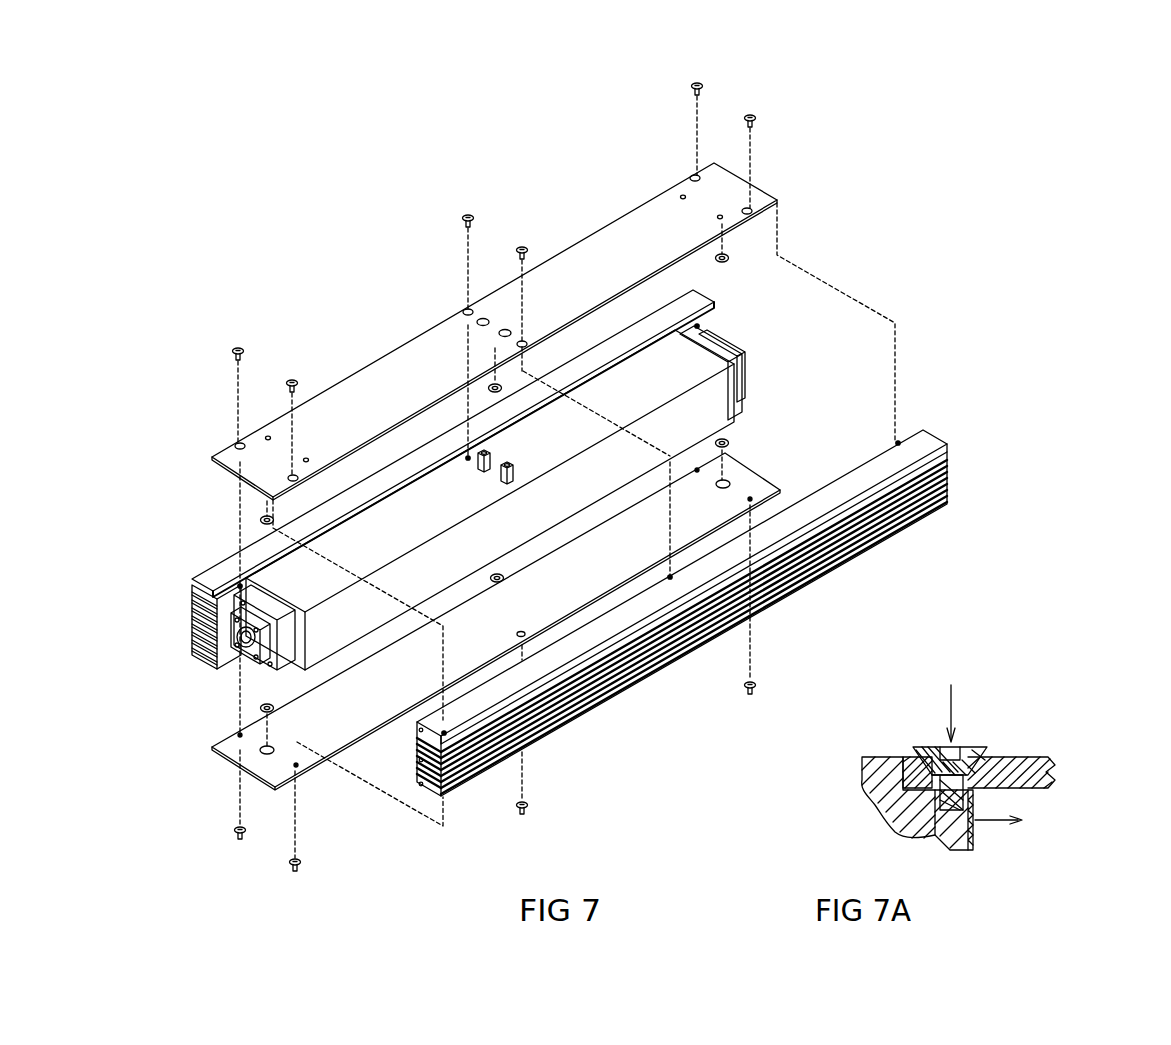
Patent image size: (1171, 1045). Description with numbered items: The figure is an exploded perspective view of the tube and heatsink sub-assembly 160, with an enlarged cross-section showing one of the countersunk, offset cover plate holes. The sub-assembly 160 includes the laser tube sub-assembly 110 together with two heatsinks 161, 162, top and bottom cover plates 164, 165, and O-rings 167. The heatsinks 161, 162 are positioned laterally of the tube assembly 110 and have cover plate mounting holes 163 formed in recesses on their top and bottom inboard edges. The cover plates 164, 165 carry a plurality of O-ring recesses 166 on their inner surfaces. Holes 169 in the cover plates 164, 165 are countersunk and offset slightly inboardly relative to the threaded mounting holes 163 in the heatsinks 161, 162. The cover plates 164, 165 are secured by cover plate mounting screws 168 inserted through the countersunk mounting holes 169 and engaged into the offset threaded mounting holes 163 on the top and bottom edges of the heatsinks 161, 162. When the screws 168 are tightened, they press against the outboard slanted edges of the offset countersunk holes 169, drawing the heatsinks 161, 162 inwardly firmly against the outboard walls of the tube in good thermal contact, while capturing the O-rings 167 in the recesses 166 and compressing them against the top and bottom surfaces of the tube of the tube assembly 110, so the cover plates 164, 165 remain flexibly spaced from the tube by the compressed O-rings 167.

In FIG. 7, the laser tube sub-assembly 110 is at (762, 382).
In FIG. 7, the tube and heatsink sub-assembly 160 is at (378, 232).
In FIG. 7, the heatsink 161 is at (930, 426).
In FIG. 7, the heatsink 162 is at (238, 600).
In FIG. 7A, the heatsink 162 is at (888, 792).
In FIG. 7, the cover plate mounting hole 163 is at (696, 324).
In FIG. 7A, the cover plate mounting hole 163 is at (948, 838).
In FIG. 7, the cover plate 164 is at (268, 752).
In FIG. 7, the cover plate 165 is at (401, 377).
In FIG. 7A, the cover plate 165 is at (1012, 764).
In FIG. 7, the O-ring recess 166 is at (262, 750).
In FIG. 7, the O-ring 167 is at (724, 264).
In FIG. 7, the cover plate mounting screw 168 is at (243, 357).
In FIG. 7A, the cover plate mounting screw 168 is at (967, 745).
In FIG. 7, the countersunk mounting hole 169 is at (290, 479).
In FIG. 7A, the countersunk mounting hole 169 is at (975, 758).